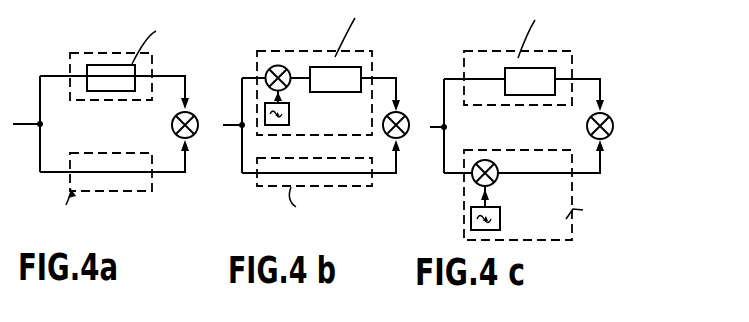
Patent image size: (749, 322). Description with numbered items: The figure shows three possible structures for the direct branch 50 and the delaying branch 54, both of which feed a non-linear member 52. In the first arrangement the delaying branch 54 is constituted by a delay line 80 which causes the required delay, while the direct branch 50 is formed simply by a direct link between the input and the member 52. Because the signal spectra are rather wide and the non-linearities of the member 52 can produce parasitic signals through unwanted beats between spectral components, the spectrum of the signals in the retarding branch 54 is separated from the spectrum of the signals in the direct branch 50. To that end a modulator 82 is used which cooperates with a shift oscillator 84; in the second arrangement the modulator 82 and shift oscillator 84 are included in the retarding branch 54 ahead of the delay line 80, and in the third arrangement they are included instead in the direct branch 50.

In FIG. 4A, the direct branch 50 is at (133, 152).
In FIG. 4B, the direct branch 50 is at (276, 187).
In FIG. 4C, the direct branch 50 is at (537, 152).
In FIG. 4A, the member 52 is at (198, 125).
In FIG. 4B, the member 52 is at (418, 105).
In FIG. 4C, the member 52 is at (614, 123).
In FIG. 4A, the delaying branch 54 is at (111, 52).
In FIG. 4B, the delaying branch 54 is at (301, 50).
In FIG. 4C, the delaying branch 54 is at (478, 50).
In FIG. 4A, the delay line 80 is at (95, 64).
In FIG. 4B, the delay line 80 is at (355, 92).
In FIG. 4C, the delay line 80 is at (530, 82).
In FIG. 4B, the modulator 82 is at (281, 64).
In FIG. 4C, the modulator 82 is at (496, 183).
In FIG. 4B, the shift oscillator 84 is at (289, 114).
In FIG. 4C, the shift oscillator 84 is at (500, 212).